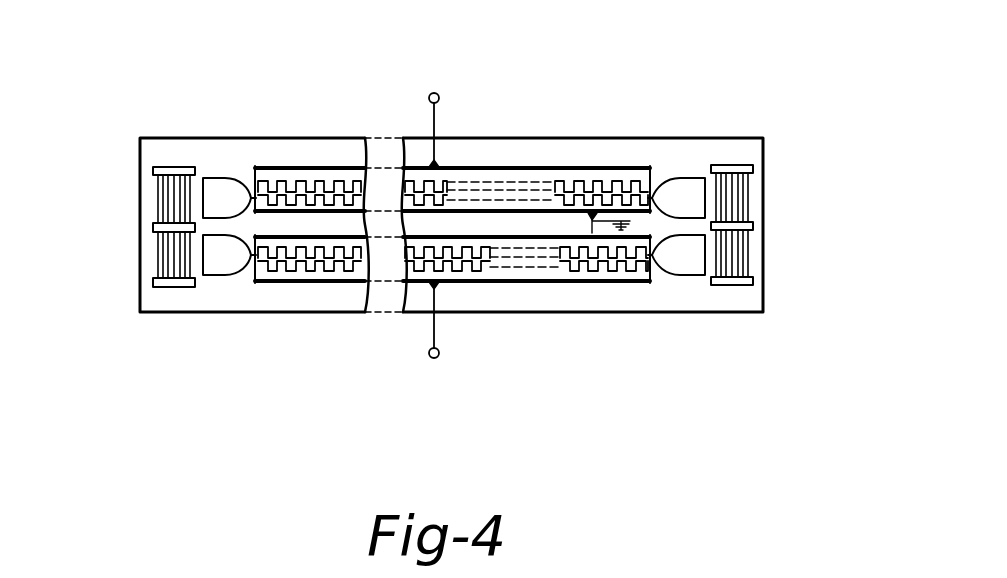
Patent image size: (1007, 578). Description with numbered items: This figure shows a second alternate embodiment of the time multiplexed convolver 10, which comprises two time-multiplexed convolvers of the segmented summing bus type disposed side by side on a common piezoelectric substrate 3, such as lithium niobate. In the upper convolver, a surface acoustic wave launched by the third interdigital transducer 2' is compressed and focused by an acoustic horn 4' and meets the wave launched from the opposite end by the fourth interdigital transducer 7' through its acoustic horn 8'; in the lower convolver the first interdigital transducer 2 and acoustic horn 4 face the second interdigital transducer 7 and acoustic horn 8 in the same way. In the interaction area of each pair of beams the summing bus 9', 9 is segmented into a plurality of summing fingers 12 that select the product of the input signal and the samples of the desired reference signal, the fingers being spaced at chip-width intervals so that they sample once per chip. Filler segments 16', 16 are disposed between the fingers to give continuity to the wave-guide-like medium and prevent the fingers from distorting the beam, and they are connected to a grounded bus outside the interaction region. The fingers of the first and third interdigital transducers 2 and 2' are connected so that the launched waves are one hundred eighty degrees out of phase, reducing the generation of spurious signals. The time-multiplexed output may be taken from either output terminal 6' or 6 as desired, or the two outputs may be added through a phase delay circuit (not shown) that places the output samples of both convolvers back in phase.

The interdigital transducer 2' is at (136, 195).
The interdigital transducer 2 is at (136, 257).
The acoustic horn 4' is at (231, 135).
The acoustic horn 4 is at (222, 317).
The summing bus 9' is at (310, 135).
The summing bus 9 is at (301, 323).
The summing fingers 12 is at (353, 273).
The output terminal 6' is at (460, 91).
The output terminal 6 is at (413, 358).
The housing 10 is at (640, 136).
The filler segments 16' is at (529, 129).
The filler segments 16 is at (526, 323).
The piezoelectric substrate 3 is at (617, 300).
The acoustic horn 8' is at (703, 122).
The acoustic horn 8 is at (676, 328).
The interdigital transducer 7' is at (765, 177).
The interdigital transducer 7 is at (766, 239).